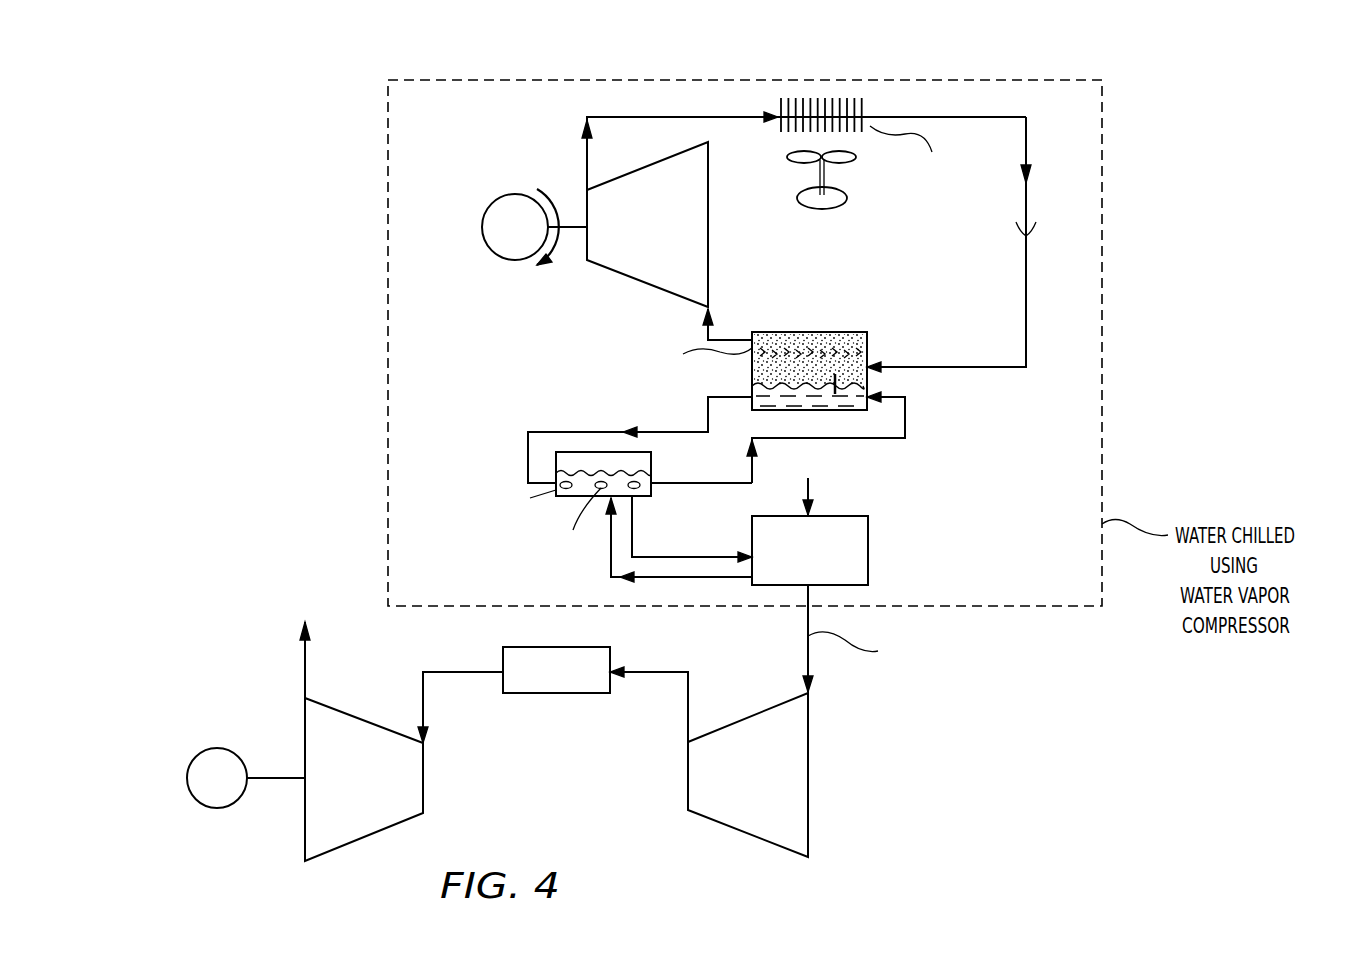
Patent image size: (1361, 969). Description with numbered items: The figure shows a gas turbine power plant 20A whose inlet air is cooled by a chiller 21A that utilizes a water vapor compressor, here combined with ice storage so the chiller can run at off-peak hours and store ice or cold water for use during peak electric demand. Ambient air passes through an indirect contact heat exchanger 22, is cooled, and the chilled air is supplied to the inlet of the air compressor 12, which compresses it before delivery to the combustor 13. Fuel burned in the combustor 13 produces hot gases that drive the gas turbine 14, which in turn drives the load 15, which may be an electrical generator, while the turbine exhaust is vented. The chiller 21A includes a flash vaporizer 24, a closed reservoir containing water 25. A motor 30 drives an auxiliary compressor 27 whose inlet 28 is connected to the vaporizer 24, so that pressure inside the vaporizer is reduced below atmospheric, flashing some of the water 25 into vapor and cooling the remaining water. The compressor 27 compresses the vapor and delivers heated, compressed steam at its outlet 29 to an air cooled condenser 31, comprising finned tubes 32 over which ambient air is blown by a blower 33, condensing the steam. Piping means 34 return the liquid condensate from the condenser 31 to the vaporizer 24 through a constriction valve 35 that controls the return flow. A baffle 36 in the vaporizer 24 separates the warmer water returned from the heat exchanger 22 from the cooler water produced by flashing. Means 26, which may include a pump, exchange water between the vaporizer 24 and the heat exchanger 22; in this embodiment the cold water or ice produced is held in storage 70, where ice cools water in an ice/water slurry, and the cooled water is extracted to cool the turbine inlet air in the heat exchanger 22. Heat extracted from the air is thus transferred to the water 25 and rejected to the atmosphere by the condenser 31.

The air compressor 12 is at (808, 775).
The combustor 13 is at (556, 693).
The gas turbine 14 is at (372, 836).
The load 15 is at (196, 758).
The power plant 20A is at (338, 420).
The chiller 21A is at (1102, 385).
The indirect contact heat exchanger 22 is at (868, 568).
The flash vaporizer 24 is at (843, 332).
The water 25 is at (752, 385).
The means for exchanging water 26 is at (905, 418).
The auxiliary compressor 27 is at (708, 255).
The inlet 28 is at (706, 337).
The outlet 29 is at (588, 148).
The motor 30 is at (515, 261).
The condenser 31 is at (888, 124).
The finned tubes 32 is at (812, 98).
The blower 33 is at (843, 180).
The means connecting condenser to vaporizer 34 is at (1026, 133).
The constriction valve 35 is at (1030, 236).
The baffle 36 is at (868, 374).
The ice/cold water storage 70 is at (643, 462).